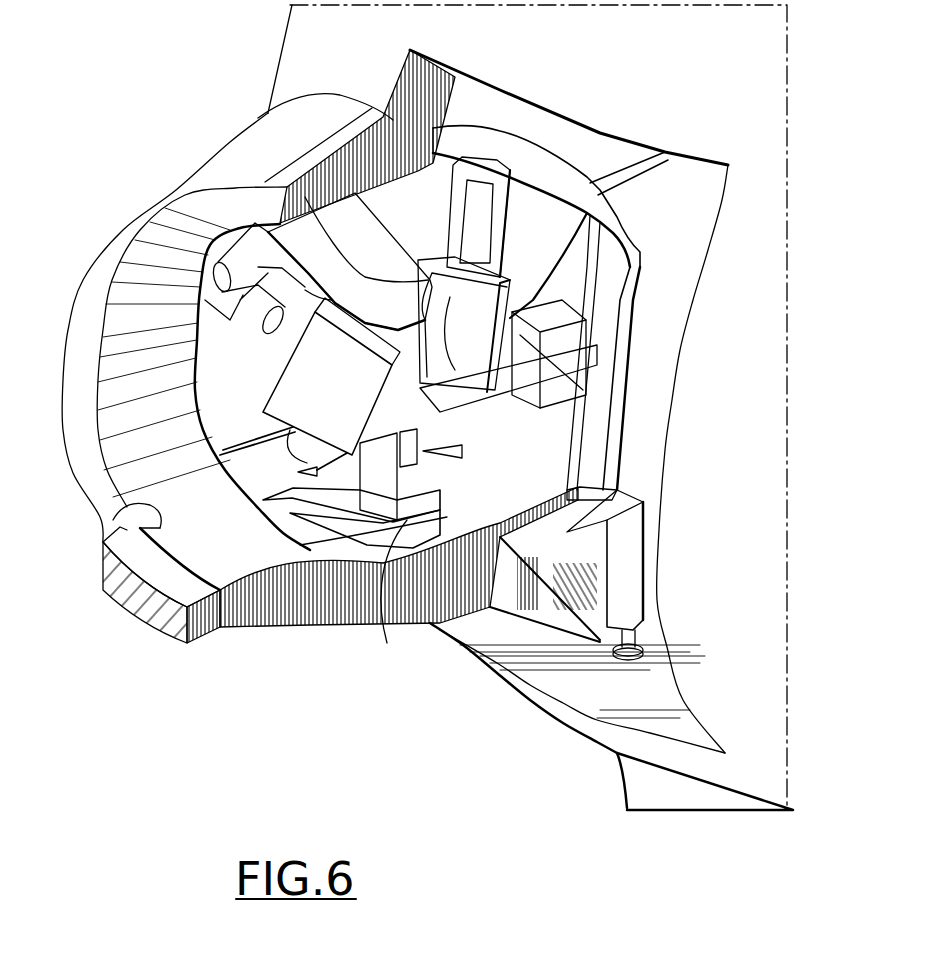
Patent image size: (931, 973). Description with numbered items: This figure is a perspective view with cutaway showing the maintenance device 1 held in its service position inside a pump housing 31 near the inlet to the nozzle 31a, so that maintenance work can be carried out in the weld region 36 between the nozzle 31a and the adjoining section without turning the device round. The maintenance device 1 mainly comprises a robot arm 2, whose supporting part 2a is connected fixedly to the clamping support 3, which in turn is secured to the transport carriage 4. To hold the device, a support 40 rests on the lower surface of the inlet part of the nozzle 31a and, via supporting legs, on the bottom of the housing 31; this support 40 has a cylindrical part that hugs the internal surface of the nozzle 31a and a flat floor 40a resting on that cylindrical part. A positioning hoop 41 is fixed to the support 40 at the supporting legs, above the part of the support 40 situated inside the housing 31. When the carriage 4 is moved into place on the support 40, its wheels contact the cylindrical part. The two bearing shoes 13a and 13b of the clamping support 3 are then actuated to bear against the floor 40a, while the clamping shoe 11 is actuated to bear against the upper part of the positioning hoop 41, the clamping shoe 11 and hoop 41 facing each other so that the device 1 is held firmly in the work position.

The maintenance device 1 is at (298, 472).
The robot arm 2 is at (385, 307).
The supporting part 2a is at (480, 327).
The clamping support 3 is at (443, 412).
The transport carriage 4 is at (553, 428).
The clamping shoe 11 is at (487, 165).
The bearing shoe 13a is at (387, 645).
The bearing shoe 13b is at (455, 455).
The pump housing 31 is at (678, 558).
The nozzle 31a is at (247, 160).
The weld region 36 is at (112, 517).
The support 40 is at (263, 500).
The flat floor 40a is at (302, 538).
The positioning hoop 41 is at (610, 378).